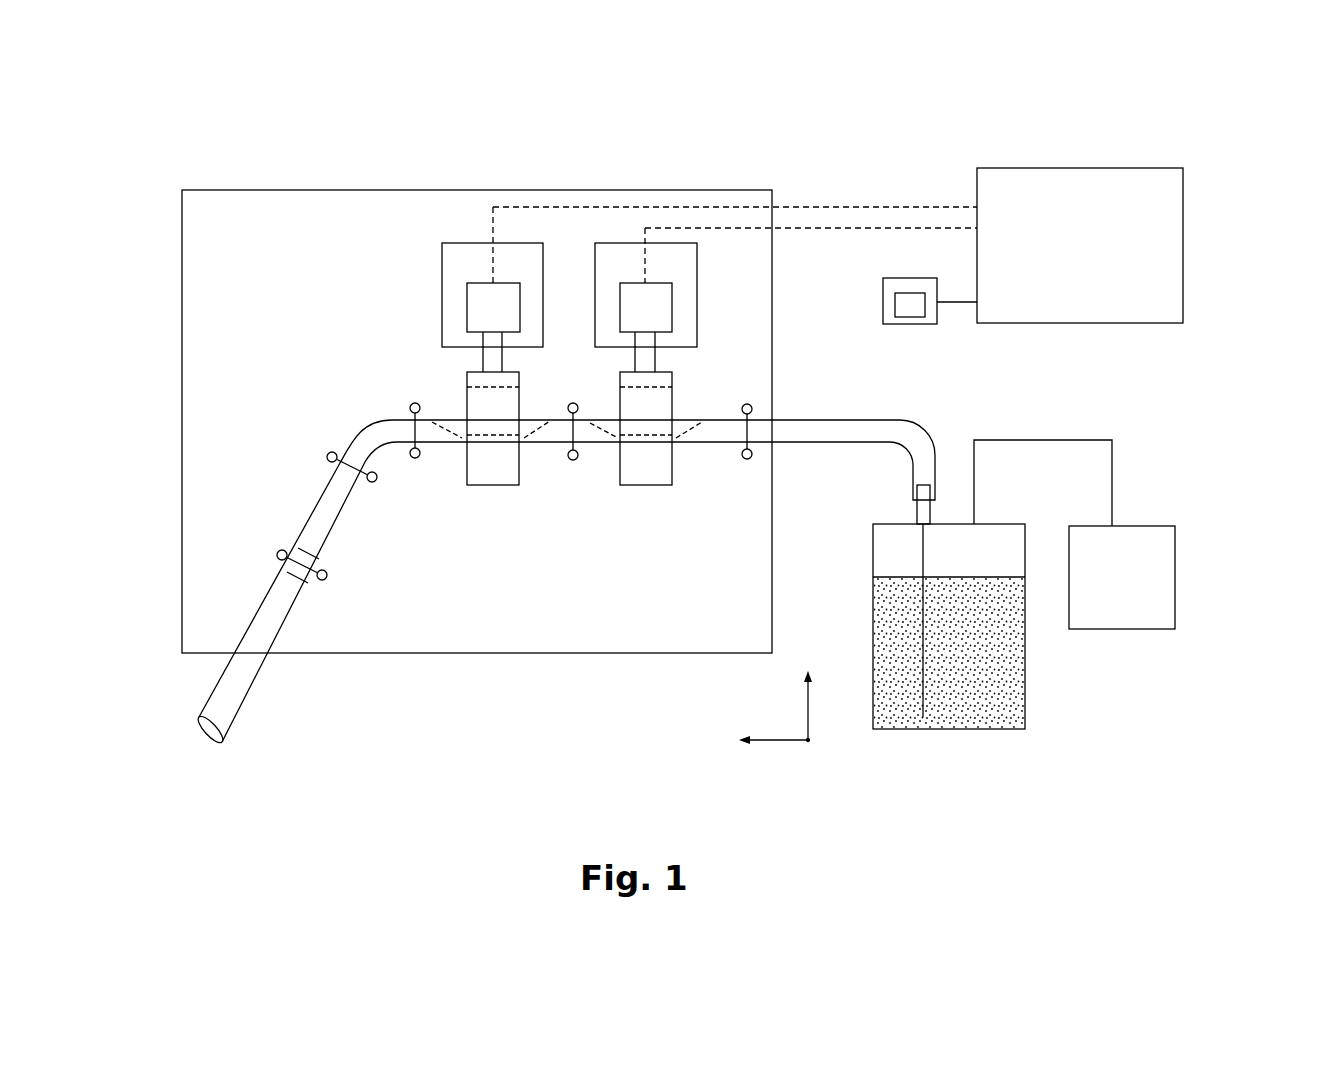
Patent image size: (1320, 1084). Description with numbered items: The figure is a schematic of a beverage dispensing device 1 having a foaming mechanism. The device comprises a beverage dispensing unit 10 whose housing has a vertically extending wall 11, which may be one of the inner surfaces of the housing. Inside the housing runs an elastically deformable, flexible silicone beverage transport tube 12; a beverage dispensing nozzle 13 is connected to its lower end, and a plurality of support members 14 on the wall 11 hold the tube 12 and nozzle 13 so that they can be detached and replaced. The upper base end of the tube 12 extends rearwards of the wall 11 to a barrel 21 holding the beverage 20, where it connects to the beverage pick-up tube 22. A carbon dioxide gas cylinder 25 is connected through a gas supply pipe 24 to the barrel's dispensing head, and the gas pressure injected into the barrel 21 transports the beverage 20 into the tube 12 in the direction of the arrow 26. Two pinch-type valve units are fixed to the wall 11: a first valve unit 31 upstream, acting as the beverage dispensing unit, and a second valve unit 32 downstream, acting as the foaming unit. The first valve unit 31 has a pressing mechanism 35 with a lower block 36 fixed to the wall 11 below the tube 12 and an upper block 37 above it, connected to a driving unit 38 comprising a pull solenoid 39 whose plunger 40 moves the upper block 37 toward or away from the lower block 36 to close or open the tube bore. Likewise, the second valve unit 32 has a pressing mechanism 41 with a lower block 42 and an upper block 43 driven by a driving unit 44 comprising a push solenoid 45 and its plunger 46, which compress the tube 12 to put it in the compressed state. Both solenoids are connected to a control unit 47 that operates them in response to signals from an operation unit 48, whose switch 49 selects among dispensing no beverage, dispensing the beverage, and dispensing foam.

The beverage dispensing device 1 is at (228, 184).
The beverage dispensing unit 10 is at (428, 189).
The wall 11 is at (288, 318).
The beverage transport tube 12 is at (338, 510).
The beverage dispensing nozzle 13 is at (243, 686).
The support members 14 is at (749, 458).
The beverage 20 is at (949, 636).
The barrel 21 is at (873, 608).
The beverage pick-up tube 22 is at (935, 693).
The gas supply pipe 24 is at (1042, 440).
The carbon dioxide gas cylinder 25 is at (1175, 526).
The arrow 26 is at (663, 431).
The first valve unit 31 is at (604, 232).
The second valve unit 32 is at (462, 232).
The pressing mechanism 35 is at (651, 479).
The lower block 36 is at (645, 482).
The upper block 37 is at (652, 403).
The driving unit 38 is at (697, 255).
The pull solenoid 39 is at (672, 305).
The plunger 40 is at (645, 362).
The pressing mechanism 41 is at (493, 479).
The lower block 42 is at (488, 482).
The upper block 43 is at (498, 403).
The driving unit 44 is at (442, 260).
The push solenoid 45 is at (467, 300).
The plunger 46 is at (490, 356).
The control unit 47 is at (1065, 168).
The operation unit 48 is at (883, 302).
The switch 49 is at (905, 317).